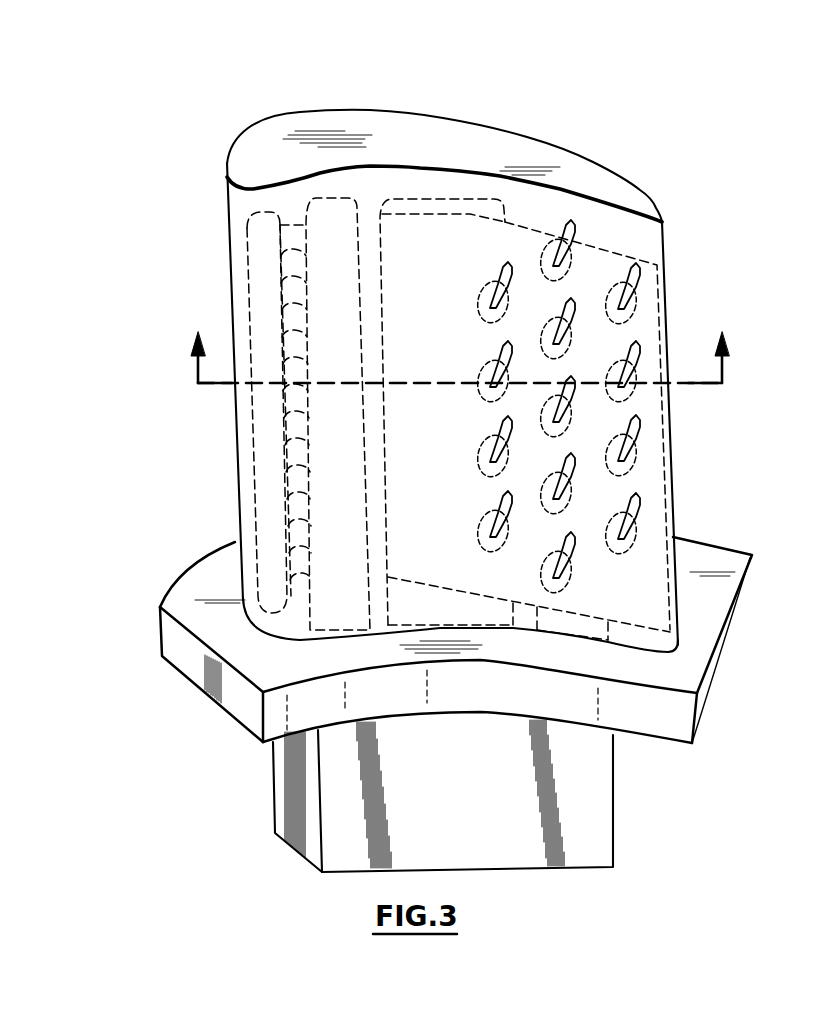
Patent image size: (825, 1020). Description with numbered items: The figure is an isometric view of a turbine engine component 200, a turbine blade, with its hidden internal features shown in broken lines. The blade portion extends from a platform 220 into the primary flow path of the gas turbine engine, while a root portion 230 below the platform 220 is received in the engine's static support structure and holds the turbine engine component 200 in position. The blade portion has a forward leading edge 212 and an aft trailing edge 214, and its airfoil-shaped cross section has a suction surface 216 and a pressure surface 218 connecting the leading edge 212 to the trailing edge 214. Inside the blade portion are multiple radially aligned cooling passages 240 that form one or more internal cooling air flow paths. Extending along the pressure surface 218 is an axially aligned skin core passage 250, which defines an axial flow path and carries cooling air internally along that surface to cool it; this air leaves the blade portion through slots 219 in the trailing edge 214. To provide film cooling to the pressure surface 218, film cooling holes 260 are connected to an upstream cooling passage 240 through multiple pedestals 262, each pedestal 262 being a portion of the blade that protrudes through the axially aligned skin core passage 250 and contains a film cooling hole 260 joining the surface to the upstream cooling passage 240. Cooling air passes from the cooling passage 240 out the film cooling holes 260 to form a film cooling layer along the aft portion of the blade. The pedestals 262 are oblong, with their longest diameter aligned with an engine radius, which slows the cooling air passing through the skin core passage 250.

The turbine engine component 200 is at (190, 131).
The leading edge 212 is at (228, 236).
The trailing edge 214 is at (666, 240).
The suction surface 216 is at (443, 116).
The pressure surface 218 is at (431, 176).
The slots 219 is at (668, 467).
The platform 220 is at (683, 678).
The root portion 230 is at (588, 835).
The radially aligned cooling passages 240 is at (333, 210).
The axially aligned skin core passage 250 is at (648, 553).
The film cooling holes 260 is at (599, 365).
The pedestals 262 is at (542, 232).